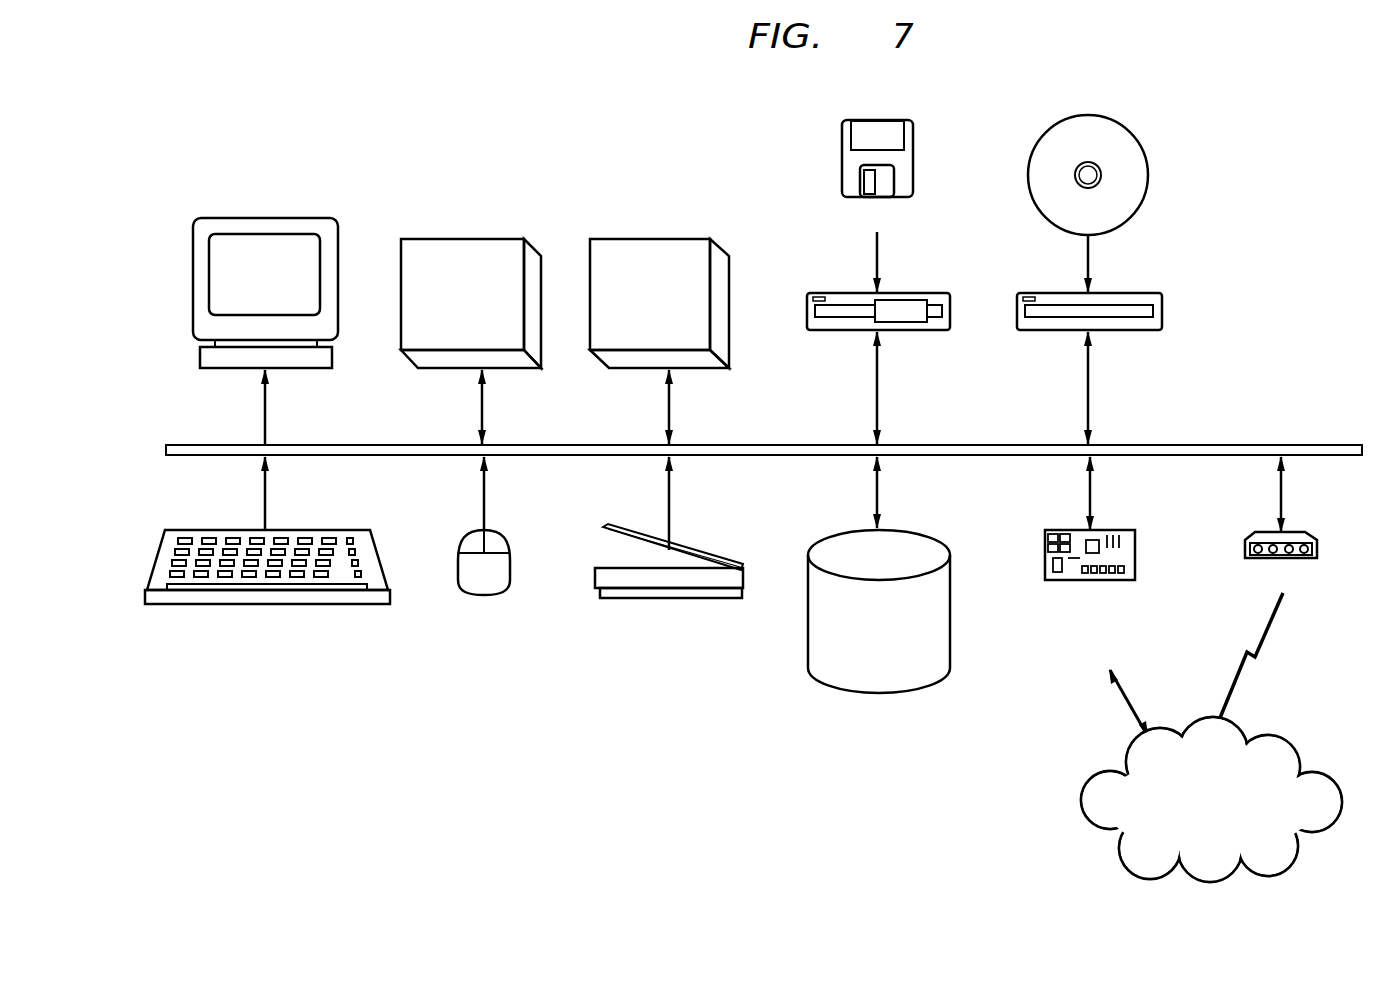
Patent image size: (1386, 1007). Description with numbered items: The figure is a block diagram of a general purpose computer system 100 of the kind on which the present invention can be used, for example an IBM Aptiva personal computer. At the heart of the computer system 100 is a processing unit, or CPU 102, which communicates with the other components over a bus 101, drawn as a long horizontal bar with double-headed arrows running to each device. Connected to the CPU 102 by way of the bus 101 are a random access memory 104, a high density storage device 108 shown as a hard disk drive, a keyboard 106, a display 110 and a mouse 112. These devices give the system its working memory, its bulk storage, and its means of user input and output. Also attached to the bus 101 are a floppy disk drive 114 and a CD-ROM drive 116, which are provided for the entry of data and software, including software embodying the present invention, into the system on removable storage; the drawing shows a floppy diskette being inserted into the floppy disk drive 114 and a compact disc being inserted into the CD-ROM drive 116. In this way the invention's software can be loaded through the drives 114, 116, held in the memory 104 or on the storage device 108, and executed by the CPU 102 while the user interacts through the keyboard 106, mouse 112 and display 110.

The computer system 100 is at (545, 116).
The bus 101 is at (1300, 444).
The processing unit (CPU) 102 is at (460, 239).
The random access memory 104 is at (658, 239).
The keyboard 106 is at (160, 555).
The high density storage device 108 is at (808, 576).
The display 110 is at (247, 218).
The mouse 112 is at (459, 557).
The floppy disk drive 114 is at (900, 283).
The CD-ROM drive 116 is at (1162, 300).